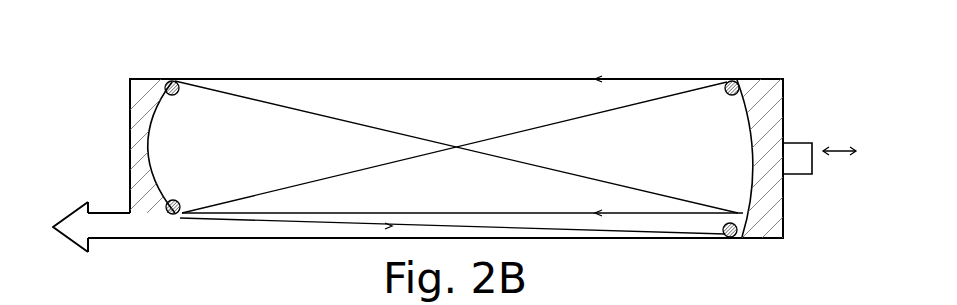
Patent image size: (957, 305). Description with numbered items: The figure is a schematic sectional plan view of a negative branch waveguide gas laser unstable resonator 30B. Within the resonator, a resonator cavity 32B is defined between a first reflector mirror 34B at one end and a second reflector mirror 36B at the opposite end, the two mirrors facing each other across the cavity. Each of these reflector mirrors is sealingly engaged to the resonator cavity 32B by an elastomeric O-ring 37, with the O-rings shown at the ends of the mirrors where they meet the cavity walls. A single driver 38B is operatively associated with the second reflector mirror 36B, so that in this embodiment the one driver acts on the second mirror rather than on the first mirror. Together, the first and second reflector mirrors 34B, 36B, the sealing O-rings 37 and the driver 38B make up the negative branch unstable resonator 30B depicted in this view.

The negative branch waveguide gas laser unstable resonator 30B is at (580, 77).
The resonator cavity 32B is at (622, 138).
The first reflector mirror 34B is at (137, 133).
The second reflector mirror 36B is at (773, 198).
The elastomeric O-ring 37 is at (170, 81).
The driver 38B is at (802, 156).